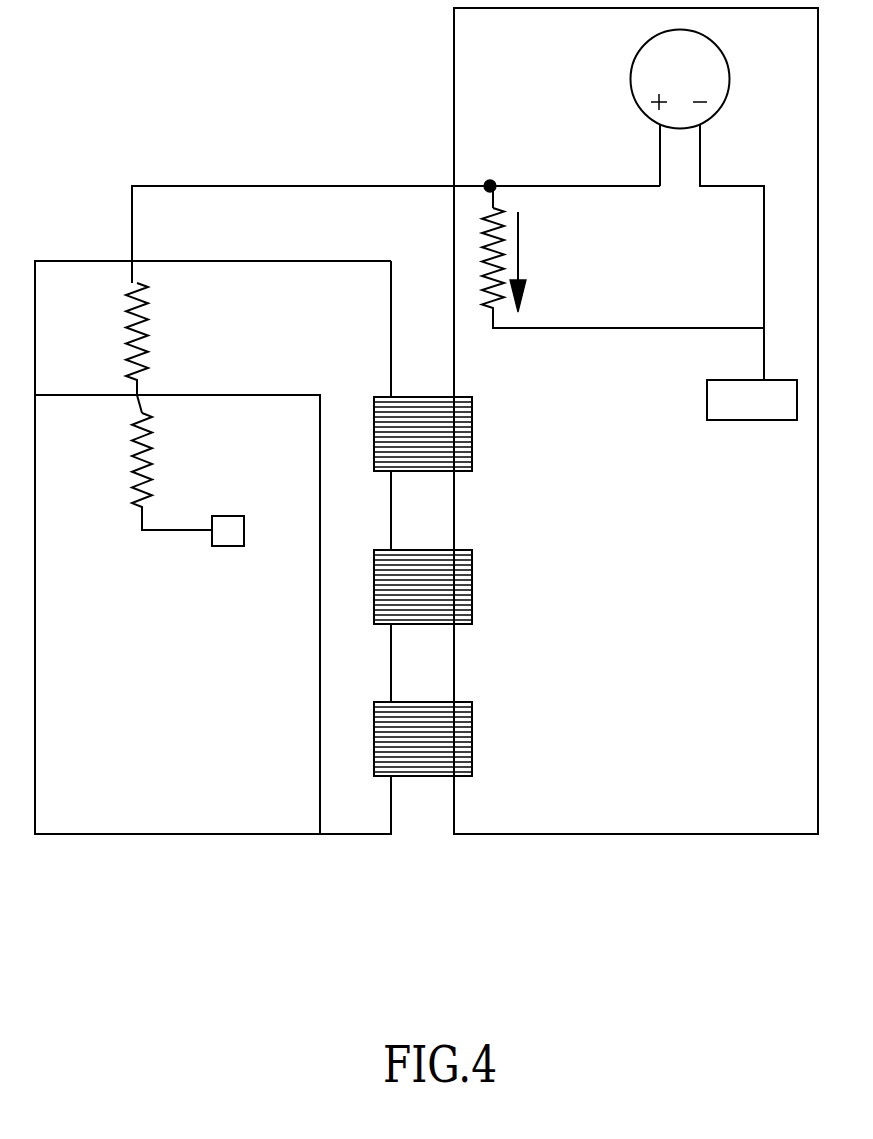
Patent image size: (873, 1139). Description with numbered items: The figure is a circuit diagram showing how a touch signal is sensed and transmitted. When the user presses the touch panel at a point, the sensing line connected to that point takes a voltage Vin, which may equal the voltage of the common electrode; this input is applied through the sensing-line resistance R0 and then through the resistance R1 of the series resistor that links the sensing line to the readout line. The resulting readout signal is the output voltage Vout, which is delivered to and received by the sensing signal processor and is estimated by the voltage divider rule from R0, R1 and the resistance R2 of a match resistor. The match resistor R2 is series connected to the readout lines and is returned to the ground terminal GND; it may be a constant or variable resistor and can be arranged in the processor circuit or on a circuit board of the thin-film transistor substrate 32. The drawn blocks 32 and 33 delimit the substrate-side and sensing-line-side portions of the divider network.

The thin-film transistor substrate 32 is at (213, 547).
The input circuit unit 33 is at (177, 614).
The resistance of the series resistor R1 is at (160, 348).
The resistance of the sensing line R0 is at (172, 471).
The resistance of a match resistor R2 is at (623, 257).
The voltage of the sensing line Vin is at (228, 550).
The output voltage Vout is at (606, 170).
The ground terminal GND is at (752, 418).